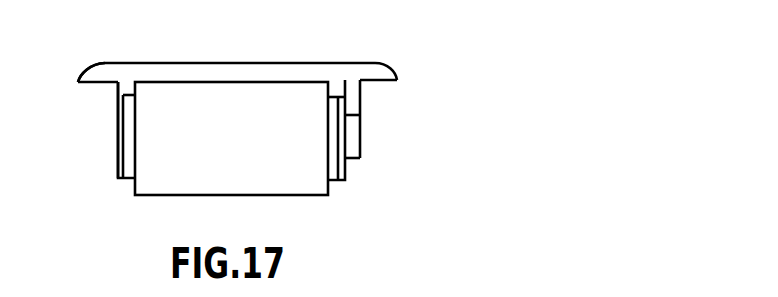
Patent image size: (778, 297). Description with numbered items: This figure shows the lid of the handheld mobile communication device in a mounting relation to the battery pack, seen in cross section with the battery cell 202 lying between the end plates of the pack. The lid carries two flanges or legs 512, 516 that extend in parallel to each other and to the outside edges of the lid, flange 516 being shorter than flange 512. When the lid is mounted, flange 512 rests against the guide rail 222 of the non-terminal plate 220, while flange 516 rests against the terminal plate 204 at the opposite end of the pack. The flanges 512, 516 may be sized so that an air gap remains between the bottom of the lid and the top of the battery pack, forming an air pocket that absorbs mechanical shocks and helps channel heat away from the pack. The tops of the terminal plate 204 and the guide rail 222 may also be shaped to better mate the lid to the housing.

The battery cell 202 is at (310, 175).
The terminal plate 204 is at (110, 98).
The non-terminal plate 220 is at (337, 165).
The guide rail 222 is at (360, 140).
The flange 512 is at (360, 98).
The flange 516 is at (117, 87).